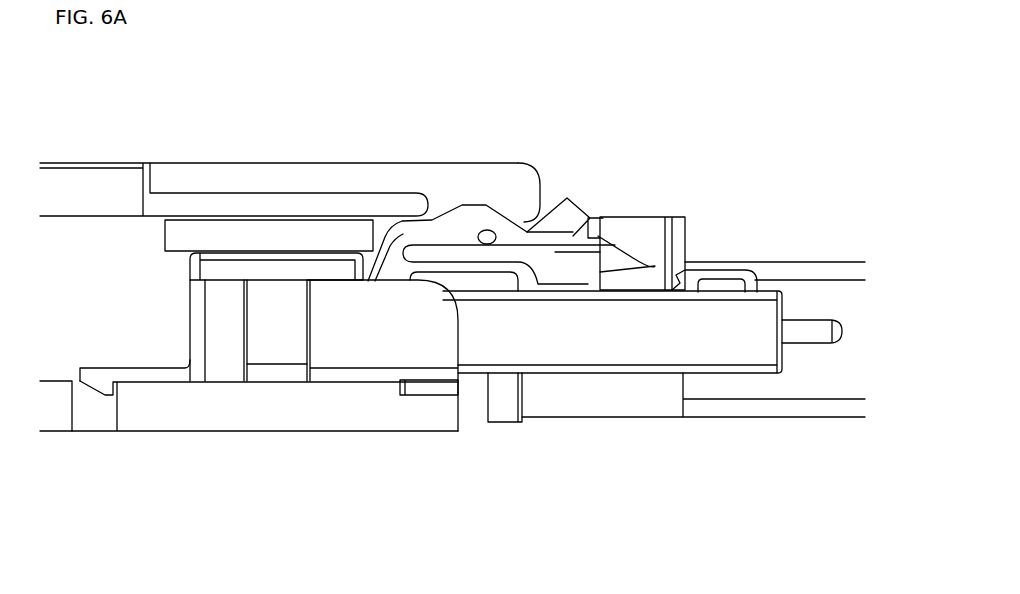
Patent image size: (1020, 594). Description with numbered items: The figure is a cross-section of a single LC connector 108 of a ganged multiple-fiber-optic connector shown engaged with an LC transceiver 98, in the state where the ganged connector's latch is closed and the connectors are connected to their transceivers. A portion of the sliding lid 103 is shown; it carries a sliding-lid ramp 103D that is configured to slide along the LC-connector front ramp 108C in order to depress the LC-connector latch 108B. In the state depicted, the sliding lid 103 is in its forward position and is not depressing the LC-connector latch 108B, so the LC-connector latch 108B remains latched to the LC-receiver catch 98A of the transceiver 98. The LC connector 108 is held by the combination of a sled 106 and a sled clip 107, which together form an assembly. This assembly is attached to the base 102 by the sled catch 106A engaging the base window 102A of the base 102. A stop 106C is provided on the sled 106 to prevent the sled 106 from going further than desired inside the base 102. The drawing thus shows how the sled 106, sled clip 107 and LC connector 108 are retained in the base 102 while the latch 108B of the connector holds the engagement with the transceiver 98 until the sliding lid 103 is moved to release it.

The LC transceiver 98 is at (797, 272).
The LC-receiver catch 98A is at (636, 252).
The base 102 is at (185, 427).
The base window 102A is at (97, 427).
The sliding lid 103 is at (197, 182).
The sliding-lid ramp 103D is at (503, 223).
The sled 106 is at (365, 333).
The sled catch 106A is at (105, 375).
The stop 106C is at (437, 387).
The sled clip 107 is at (263, 352).
The LC connector 108 is at (628, 345).
The LC-connector latch 108B is at (545, 243).
The LC-connector front ramp 108C is at (512, 222).